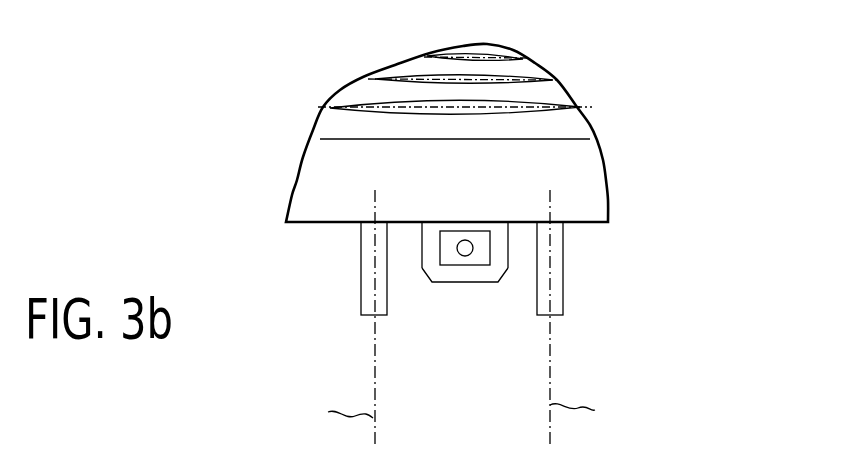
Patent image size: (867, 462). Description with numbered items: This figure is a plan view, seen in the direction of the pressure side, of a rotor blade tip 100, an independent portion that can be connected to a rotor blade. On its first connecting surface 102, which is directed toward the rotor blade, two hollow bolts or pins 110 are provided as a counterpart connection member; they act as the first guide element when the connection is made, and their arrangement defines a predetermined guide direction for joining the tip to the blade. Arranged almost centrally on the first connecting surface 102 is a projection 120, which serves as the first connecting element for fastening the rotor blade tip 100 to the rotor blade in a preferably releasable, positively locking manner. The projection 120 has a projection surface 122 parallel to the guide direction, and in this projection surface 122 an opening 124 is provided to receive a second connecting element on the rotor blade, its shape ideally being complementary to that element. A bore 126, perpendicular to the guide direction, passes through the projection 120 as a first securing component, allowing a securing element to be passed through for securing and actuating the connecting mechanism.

The rotor blade tip 100 is at (482, 244).
The first connecting surface 102 is at (303, 223).
The hollow bolts or pins 110 is at (362, 297).
The projection 120 is at (521, 320).
The projection surface 122 is at (497, 268).
The opening 124 is at (482, 250).
The bore 126 is at (468, 258).